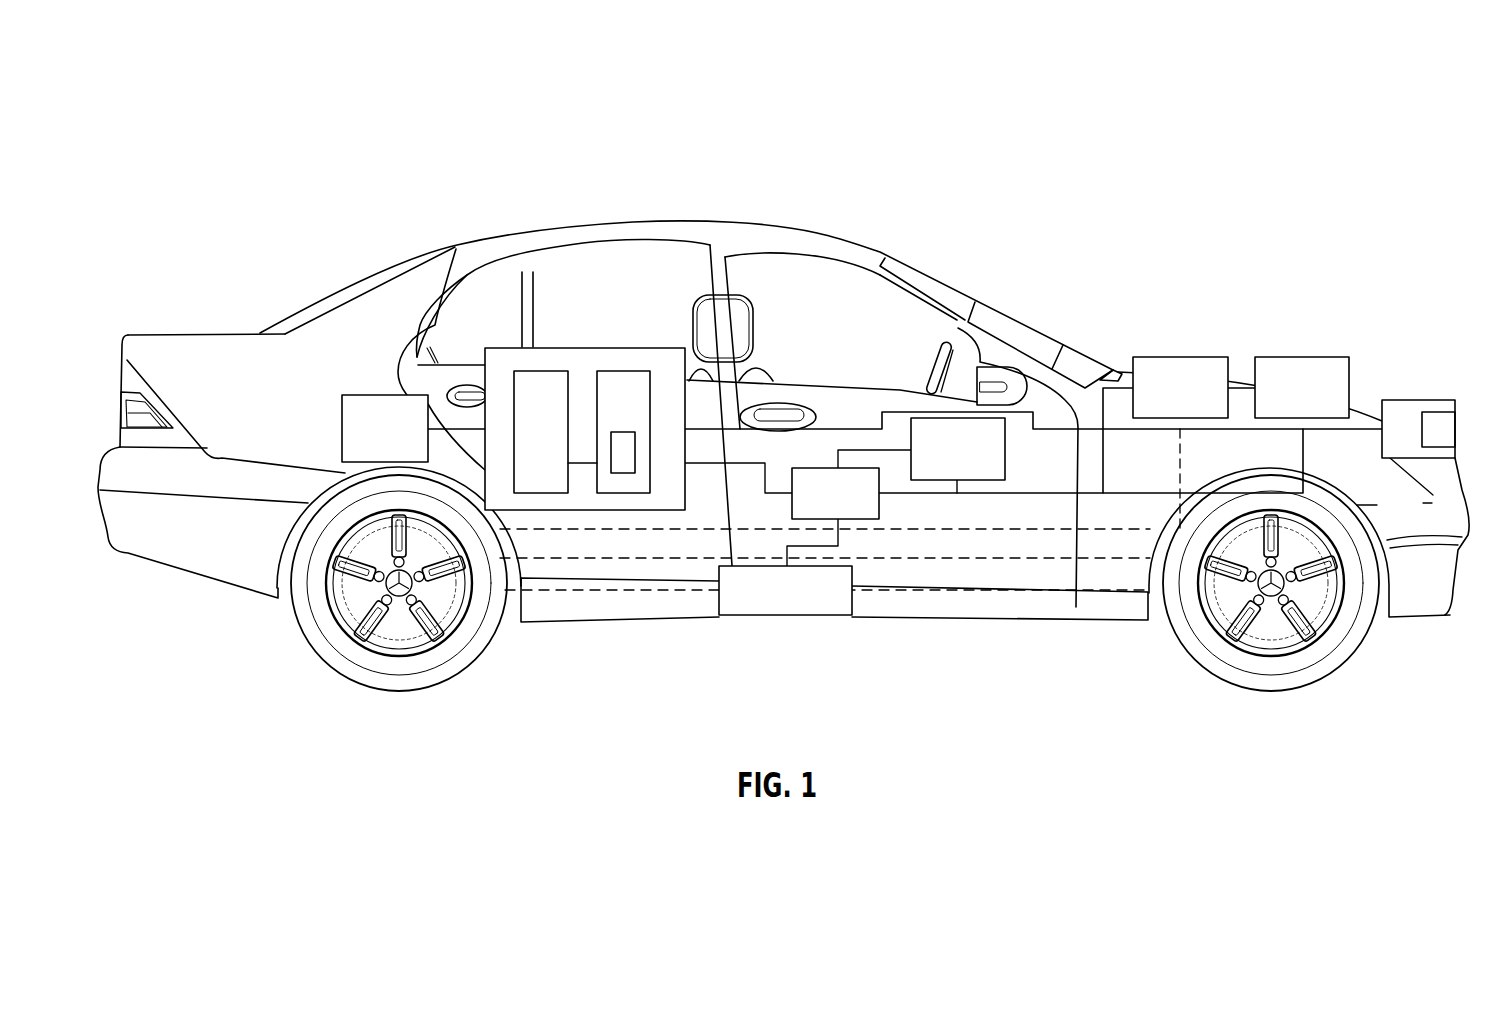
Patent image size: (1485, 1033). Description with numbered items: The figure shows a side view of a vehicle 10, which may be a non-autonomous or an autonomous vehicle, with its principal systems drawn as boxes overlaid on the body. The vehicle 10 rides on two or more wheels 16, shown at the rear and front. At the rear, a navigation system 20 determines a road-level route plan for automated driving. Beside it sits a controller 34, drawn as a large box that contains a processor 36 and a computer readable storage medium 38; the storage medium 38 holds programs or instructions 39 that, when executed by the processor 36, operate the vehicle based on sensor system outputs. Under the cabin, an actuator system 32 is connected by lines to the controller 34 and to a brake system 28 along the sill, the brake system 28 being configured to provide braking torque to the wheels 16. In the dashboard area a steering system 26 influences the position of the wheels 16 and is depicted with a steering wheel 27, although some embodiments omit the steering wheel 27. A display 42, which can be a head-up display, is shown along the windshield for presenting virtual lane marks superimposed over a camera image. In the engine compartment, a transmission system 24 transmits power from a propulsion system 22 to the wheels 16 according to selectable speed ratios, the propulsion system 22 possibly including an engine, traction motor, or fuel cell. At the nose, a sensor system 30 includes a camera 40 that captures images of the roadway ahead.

The vehicle 10 is at (239, 136).
The wheels 16 is at (345, 676).
The navigation system 20 is at (377, 395).
The propulsion system 22 is at (1305, 357).
The transmission system 24 is at (1180, 357).
The steering system 26 is at (920, 418).
The steering wheel 27 is at (943, 343).
The brake system 28 is at (772, 617).
The sensor system 30 is at (1420, 400).
The actuator system 32 is at (823, 508).
The controller 34 is at (587, 348).
The processor 36 is at (540, 371).
The computer readable storage medium 38 is at (622, 371).
The instructions 39 is at (623, 473).
The camera 40 is at (1440, 458).
The display 42 is at (1022, 320).